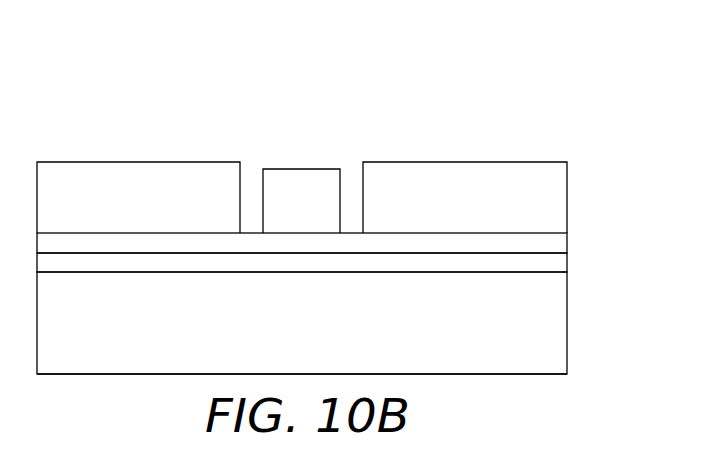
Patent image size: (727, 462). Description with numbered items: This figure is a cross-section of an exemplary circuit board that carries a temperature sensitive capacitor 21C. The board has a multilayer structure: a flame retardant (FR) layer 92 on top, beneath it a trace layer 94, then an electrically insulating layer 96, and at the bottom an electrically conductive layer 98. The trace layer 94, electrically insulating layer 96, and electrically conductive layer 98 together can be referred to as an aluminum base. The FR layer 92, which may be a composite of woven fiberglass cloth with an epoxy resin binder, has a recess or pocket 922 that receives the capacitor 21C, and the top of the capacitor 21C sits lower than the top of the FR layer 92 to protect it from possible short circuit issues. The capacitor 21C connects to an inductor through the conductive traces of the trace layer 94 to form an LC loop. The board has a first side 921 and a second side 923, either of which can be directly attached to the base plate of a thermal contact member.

The first side 921 is at (119, 86).
The recess or pocket 922 is at (252, 152).
The second side 923 is at (160, 398).
The temperature sensitive capacitor 21C is at (303, 188).
The flame retardant (FR) layer 92 is at (567, 200).
The trace layer 94 is at (567, 237).
The electrically insulating layer 96 is at (567, 263).
The electrically conductive layer 98 is at (567, 320).